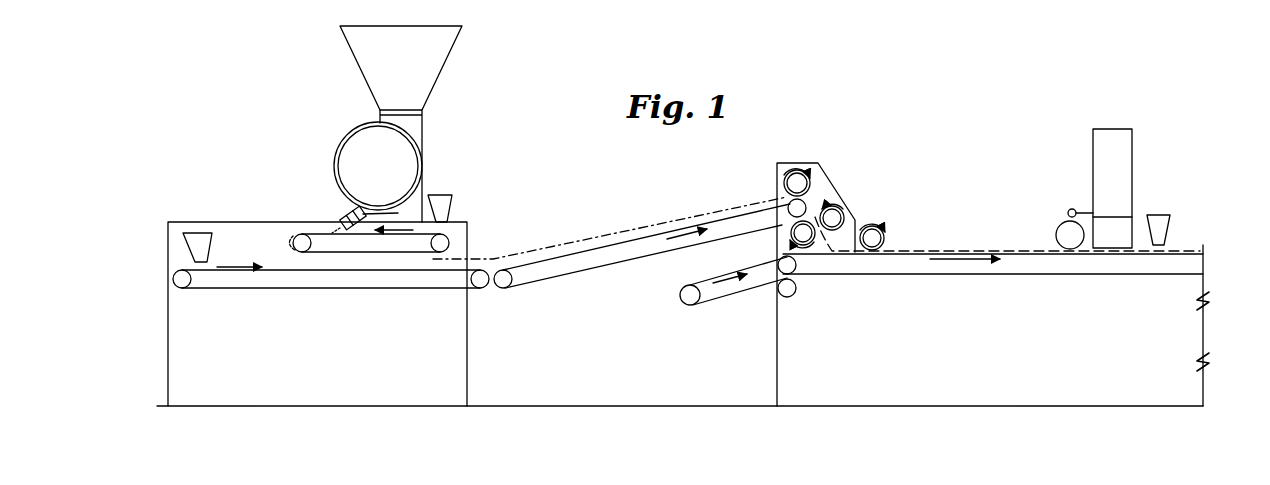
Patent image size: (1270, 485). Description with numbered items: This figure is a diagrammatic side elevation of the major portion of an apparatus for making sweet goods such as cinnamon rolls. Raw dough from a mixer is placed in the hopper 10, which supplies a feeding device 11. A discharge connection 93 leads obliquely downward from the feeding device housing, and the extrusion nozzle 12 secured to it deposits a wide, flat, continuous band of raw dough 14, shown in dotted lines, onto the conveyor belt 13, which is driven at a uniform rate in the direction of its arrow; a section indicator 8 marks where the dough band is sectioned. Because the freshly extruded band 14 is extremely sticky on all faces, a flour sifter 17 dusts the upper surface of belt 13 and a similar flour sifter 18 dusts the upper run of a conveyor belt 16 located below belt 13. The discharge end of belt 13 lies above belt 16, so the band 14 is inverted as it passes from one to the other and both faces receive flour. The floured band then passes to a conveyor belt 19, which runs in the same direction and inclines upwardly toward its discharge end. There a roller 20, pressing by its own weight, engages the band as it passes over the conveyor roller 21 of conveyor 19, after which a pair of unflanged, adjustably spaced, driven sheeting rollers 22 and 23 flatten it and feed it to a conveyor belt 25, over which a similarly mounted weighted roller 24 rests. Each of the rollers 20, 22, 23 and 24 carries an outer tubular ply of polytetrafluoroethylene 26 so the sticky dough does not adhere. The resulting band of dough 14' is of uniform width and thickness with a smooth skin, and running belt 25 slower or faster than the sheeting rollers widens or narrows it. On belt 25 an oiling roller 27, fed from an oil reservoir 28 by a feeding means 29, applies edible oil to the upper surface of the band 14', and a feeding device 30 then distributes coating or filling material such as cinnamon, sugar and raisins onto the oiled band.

The section line 8 is at (401, 282).
The hopper 10 is at (447, 53).
The feeding device 11 is at (352, 136).
The extrusion nozzle 12 is at (343, 211).
The conveyor belt 13 is at (355, 242).
The band of raw dough 14 is at (521, 250).
The band of dough 14' is at (1007, 224).
The conveyor belt 16 is at (222, 273).
The flour sifter 17 is at (450, 204).
The flour sifter 18 is at (193, 229).
The conveyor belt 19 is at (537, 265).
The roller 20 is at (800, 180).
The conveyor roller 21 is at (797, 208).
The sheeting roller 22 is at (838, 217).
The sheeting roller 23 is at (790, 228).
The roller 24 is at (873, 248).
The conveyor belt 25 is at (822, 257).
The outer tubular ply of polytetrafluoroethylene 26 is at (793, 230).
The oiling roller 27 is at (1067, 233).
The oil reservoir 28 is at (1107, 137).
The feeding means 29 is at (1071, 209).
The coating and filling material feeding device 30 is at (1165, 218).
The discharge connection 93 is at (390, 213).